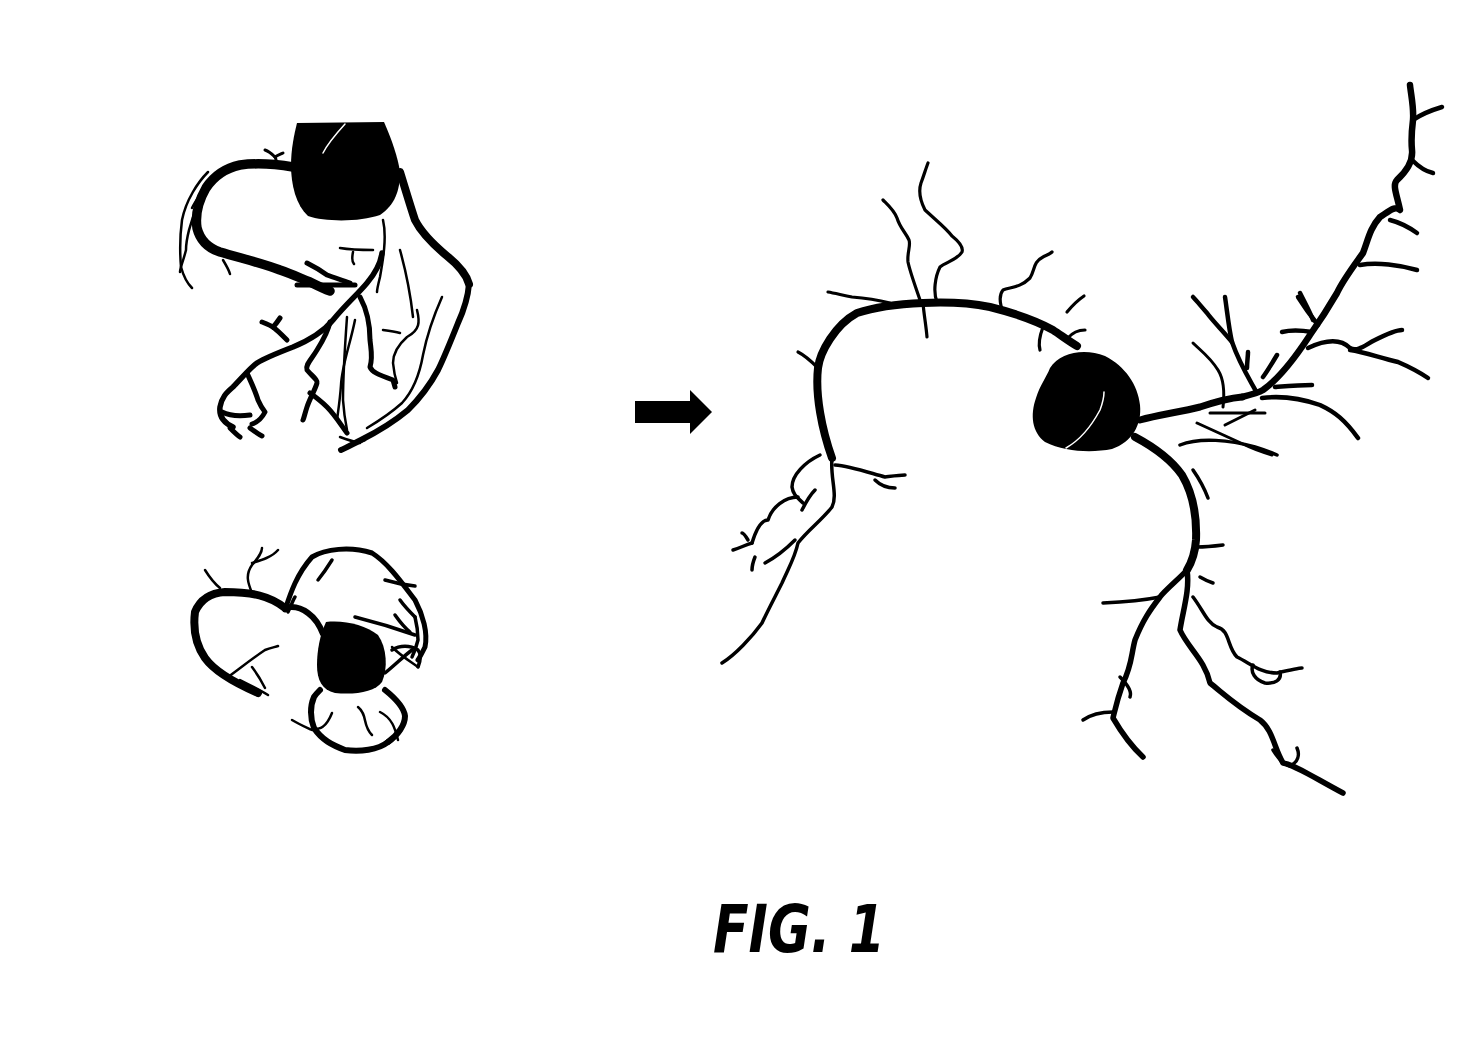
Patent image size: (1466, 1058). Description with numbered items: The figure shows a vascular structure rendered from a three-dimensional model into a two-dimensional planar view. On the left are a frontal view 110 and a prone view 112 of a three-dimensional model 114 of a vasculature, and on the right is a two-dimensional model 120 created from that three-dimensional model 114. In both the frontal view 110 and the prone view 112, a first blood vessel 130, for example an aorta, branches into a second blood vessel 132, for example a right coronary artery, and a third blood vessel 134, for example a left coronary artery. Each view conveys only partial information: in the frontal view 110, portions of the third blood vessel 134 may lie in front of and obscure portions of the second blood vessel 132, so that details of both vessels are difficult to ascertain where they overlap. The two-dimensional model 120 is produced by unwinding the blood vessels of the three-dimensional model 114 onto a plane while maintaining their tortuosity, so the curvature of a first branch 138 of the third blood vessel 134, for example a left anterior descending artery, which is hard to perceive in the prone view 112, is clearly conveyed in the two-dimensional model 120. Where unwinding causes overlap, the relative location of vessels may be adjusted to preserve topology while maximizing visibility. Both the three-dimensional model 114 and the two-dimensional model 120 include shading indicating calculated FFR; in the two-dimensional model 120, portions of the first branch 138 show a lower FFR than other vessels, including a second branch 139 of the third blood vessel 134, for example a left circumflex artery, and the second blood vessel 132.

The frontal view 110 is at (492, 242).
The prone view 112 is at (447, 548).
The three-dimensional model 114 is at (233, 301).
The two-dimensional model 120 is at (1270, 500).
The first blood vessel 130 is at (345, 124).
The second blood vessel 132 is at (214, 165).
The third blood vessel 134 is at (401, 169).
The first branch 138 is at (268, 375).
The second branch 139 is at (467, 267).